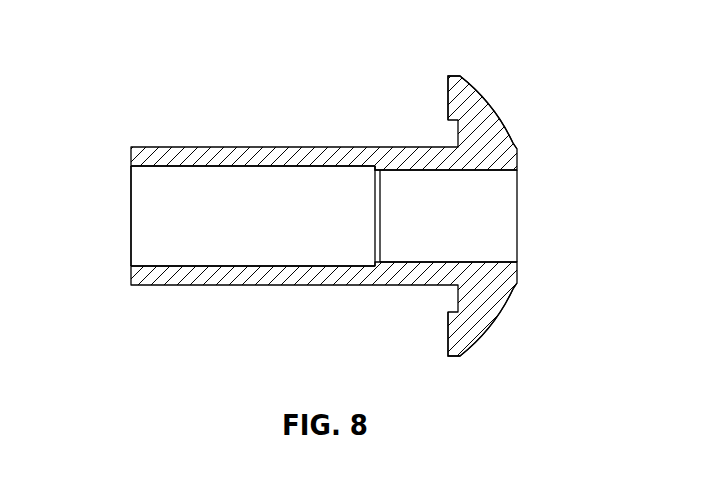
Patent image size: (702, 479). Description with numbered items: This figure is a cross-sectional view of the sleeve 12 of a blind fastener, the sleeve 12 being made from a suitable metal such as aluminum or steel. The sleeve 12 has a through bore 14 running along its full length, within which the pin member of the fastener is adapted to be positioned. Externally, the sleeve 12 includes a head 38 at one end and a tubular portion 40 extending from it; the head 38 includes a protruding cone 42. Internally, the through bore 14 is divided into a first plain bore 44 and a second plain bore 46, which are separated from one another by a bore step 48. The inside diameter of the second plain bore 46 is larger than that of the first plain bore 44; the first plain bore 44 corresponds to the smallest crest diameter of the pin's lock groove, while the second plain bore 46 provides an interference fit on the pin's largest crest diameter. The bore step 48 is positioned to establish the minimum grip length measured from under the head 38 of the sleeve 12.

The sleeve 12 is at (127, 63).
The through bore 14 is at (157, 228).
The head 38 is at (502, 110).
The tubular portion 40 is at (124, 158).
The protruding cone 42 is at (515, 145).
The first plain bore 44 is at (423, 240).
The second plain bore 46 is at (292, 240).
The bore step 48 is at (373, 177).